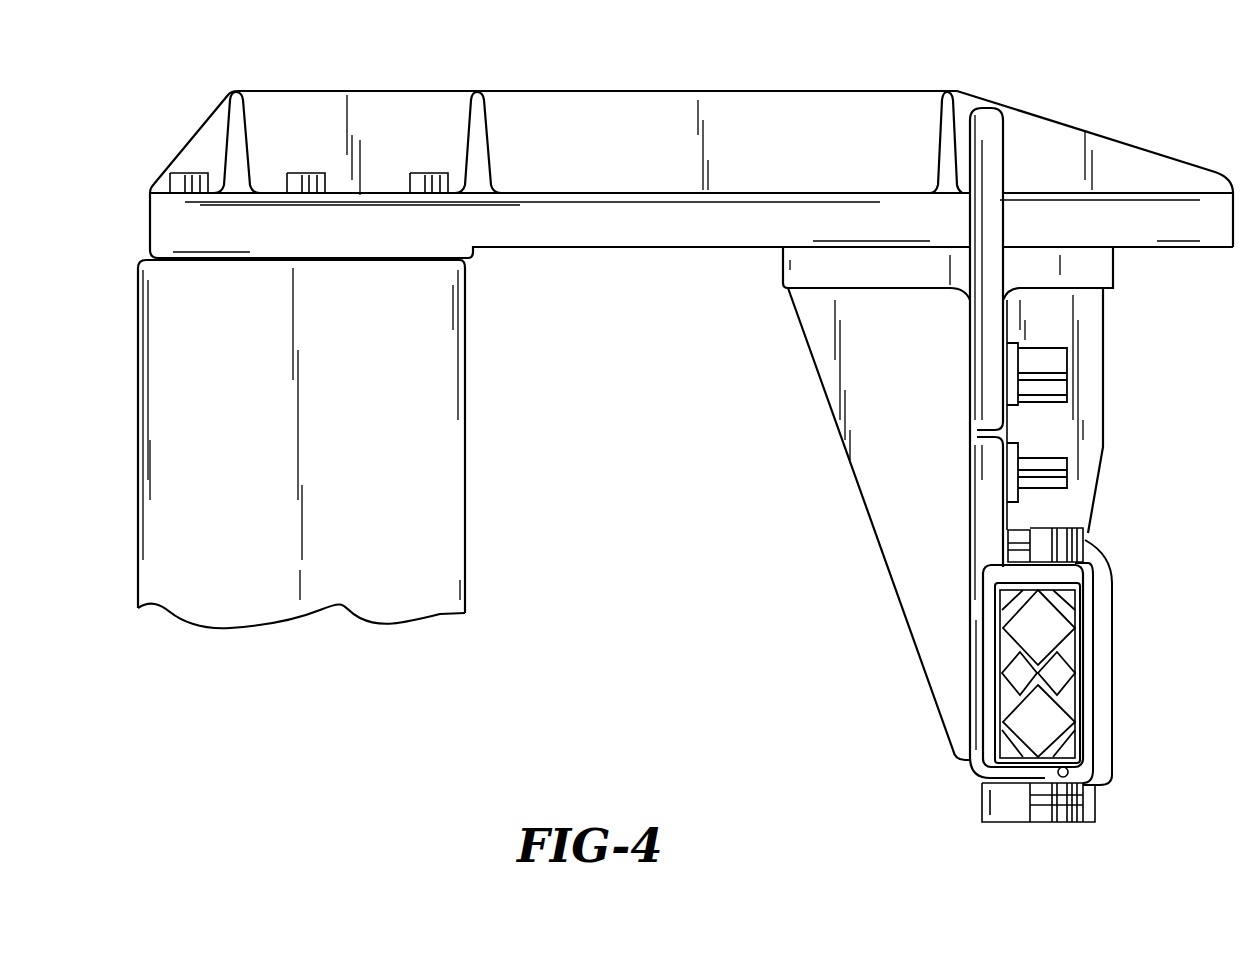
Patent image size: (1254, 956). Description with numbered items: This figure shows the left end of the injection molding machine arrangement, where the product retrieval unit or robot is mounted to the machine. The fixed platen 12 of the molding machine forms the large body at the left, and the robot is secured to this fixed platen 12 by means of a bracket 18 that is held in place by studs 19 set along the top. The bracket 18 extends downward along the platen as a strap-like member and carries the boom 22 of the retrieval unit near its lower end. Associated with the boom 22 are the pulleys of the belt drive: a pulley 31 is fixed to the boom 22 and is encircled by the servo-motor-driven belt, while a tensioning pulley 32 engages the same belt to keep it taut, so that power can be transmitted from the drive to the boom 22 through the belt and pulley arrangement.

The fixed platen 12 is at (366, 460).
The bracket 18 is at (683, 91).
The studs 19 is at (185, 172).
The boom 22 is at (1088, 617).
The pulley 31 is at (1058, 470).
The tensioning pulley 32 is at (1058, 375).